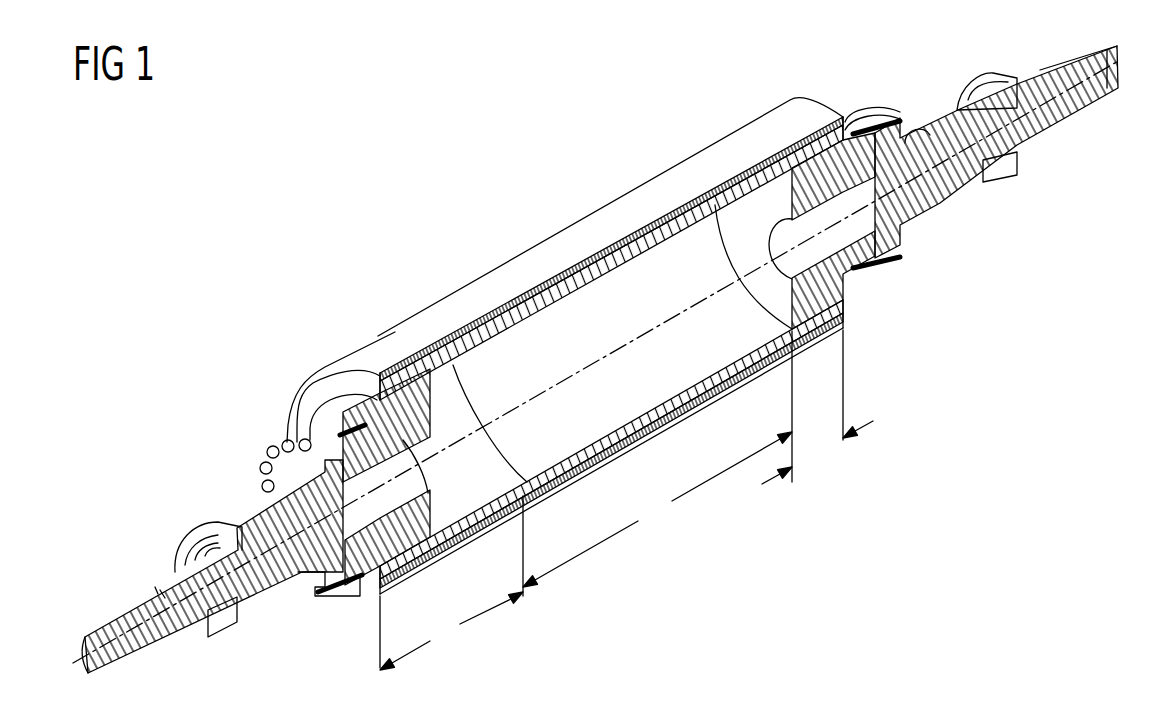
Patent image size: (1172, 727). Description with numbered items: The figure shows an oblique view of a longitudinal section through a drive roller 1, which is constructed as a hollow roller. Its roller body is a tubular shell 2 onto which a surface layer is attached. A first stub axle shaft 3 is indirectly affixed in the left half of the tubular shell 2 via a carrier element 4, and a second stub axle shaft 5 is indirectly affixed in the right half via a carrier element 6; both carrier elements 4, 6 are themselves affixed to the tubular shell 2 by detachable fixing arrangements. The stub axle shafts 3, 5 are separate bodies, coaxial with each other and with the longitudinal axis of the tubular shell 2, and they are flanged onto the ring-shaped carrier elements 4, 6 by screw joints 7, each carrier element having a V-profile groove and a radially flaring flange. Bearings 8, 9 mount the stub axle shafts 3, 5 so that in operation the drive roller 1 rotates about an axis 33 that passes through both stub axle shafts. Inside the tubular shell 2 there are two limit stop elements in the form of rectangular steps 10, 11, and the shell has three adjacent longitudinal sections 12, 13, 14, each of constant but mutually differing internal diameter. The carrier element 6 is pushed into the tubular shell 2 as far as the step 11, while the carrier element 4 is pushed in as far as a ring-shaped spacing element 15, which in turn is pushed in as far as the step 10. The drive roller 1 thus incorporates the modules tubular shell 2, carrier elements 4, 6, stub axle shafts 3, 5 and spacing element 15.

The drive roller 1 is at (362, 207).
The tubular shell 2 is at (320, 387).
The first stub axle shaft 3 is at (264, 537).
The carrier element 4 is at (422, 548).
The second stub axle shaft 5 is at (952, 130).
The carrier element 6 is at (808, 318).
The screw joint 7 is at (302, 582).
The bearing 8 is at (205, 545).
The bearing 9 is at (337, 427).
The step 10 is at (540, 320).
The step 11 is at (768, 152).
The longitudinal section 12 is at (817, 407).
The longitudinal section 13 is at (657, 459).
The longitudinal section 14 is at (451, 583).
The spacing element 15 is at (492, 538).
The axis 33 is at (1123, 52).